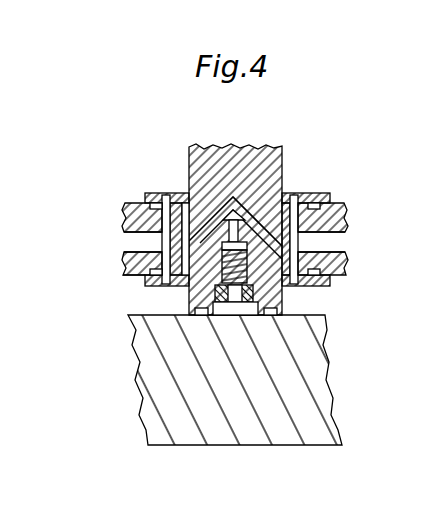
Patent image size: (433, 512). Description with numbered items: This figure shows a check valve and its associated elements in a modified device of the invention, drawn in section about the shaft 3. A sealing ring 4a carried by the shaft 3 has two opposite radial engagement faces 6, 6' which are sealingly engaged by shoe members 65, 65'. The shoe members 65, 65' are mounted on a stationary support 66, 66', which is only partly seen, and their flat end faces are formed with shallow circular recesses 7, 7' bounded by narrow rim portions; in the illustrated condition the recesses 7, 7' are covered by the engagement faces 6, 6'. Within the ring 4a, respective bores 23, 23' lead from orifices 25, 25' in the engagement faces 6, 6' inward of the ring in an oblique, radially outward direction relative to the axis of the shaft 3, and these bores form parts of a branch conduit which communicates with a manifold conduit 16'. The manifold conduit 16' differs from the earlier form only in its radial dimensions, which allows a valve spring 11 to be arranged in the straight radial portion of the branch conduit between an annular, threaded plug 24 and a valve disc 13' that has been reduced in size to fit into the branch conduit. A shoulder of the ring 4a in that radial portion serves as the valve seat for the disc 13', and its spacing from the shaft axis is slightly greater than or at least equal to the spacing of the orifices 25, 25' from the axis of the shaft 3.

The sealing ring 4a is at (233, 160).
The shaft 3 is at (163, 362).
The valve spring 11 is at (250, 284).
The threaded plug 24 is at (256, 302).
The manifold conduit 16' is at (301, 328).
The engagement face 6 is at (162, 190).
The bore 23 is at (165, 208).
The shoe member 65 is at (153, 223).
The recess 7 is at (127, 227).
The stationary support 66 is at (110, 239).
The orifice 25 is at (116, 240).
The valve disc 13' is at (101, 288).
The engagement face 6' is at (312, 193).
The bore 23' is at (316, 210).
The shoe member 65' is at (316, 223).
The recess 7' is at (348, 231).
The stationary support 66' is at (352, 239).
The orifice 25' is at (357, 243).